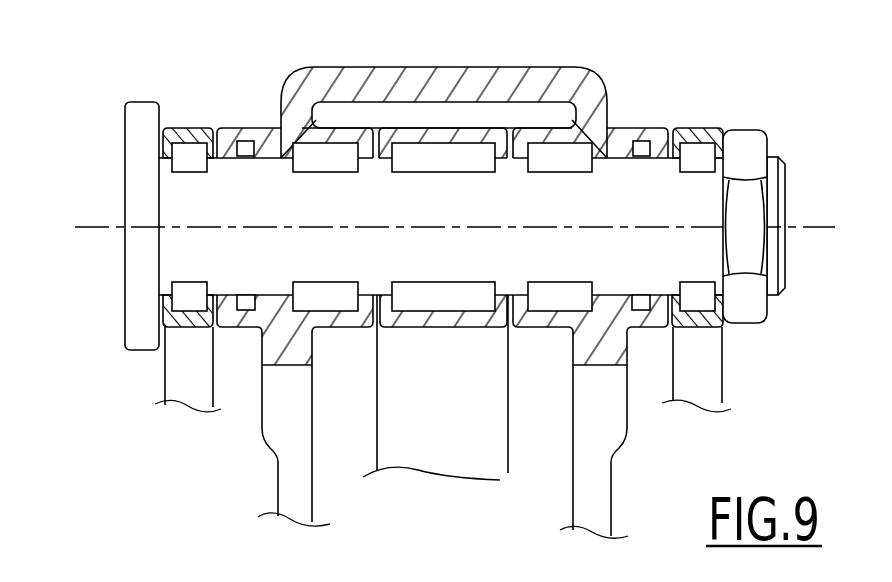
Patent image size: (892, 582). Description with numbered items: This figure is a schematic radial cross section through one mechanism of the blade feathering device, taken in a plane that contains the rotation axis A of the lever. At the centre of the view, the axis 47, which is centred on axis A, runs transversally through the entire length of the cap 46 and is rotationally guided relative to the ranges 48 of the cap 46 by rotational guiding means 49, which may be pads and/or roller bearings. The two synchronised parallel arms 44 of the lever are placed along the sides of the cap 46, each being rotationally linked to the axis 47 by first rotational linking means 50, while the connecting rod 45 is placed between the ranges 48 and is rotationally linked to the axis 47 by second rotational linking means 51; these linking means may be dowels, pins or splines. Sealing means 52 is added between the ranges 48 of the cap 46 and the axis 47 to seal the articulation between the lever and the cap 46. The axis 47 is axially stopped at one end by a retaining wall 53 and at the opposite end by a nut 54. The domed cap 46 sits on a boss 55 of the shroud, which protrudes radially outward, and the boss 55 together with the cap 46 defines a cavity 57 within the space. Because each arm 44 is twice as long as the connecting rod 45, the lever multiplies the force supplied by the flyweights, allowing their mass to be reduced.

The arm 44 is at (183, 375).
The connecting rod 45 is at (457, 420).
The cap 46 is at (566, 62).
The axis 47 is at (114, 183).
The range 48 is at (274, 150).
The rotational guiding means 49 is at (300, 156).
The first rotational linking means 50 is at (188, 156).
The second rotational linking means 51 is at (423, 158).
The sealing means 52 is at (247, 152).
The retaining wall 53 is at (164, 116).
The nut 54 is at (750, 152).
The boss 55 is at (255, 489).
The cavity 57 is at (360, 450).
The axis A is at (815, 226).